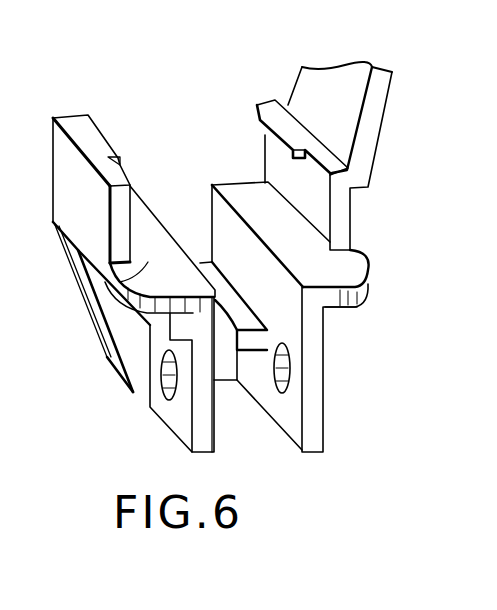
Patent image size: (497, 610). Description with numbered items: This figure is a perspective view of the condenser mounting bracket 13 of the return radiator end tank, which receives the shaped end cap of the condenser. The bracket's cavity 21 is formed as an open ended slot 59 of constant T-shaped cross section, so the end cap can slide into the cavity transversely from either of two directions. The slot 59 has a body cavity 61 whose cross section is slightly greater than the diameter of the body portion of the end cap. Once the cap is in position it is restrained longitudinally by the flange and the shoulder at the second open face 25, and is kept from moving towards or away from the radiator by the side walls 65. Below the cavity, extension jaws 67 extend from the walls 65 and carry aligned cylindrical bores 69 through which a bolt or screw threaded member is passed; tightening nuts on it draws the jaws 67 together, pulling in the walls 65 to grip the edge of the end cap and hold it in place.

The condenser mounting bracket 13 is at (352, 113).
The cavity 21 is at (207, 256).
The second open face 25 is at (330, 270).
The slot 59 is at (128, 280).
The body cavity 61 is at (272, 147).
The side walls 65 is at (63, 193).
The extension jaws 67 is at (310, 410).
The cylindrical bores 69 is at (142, 398).